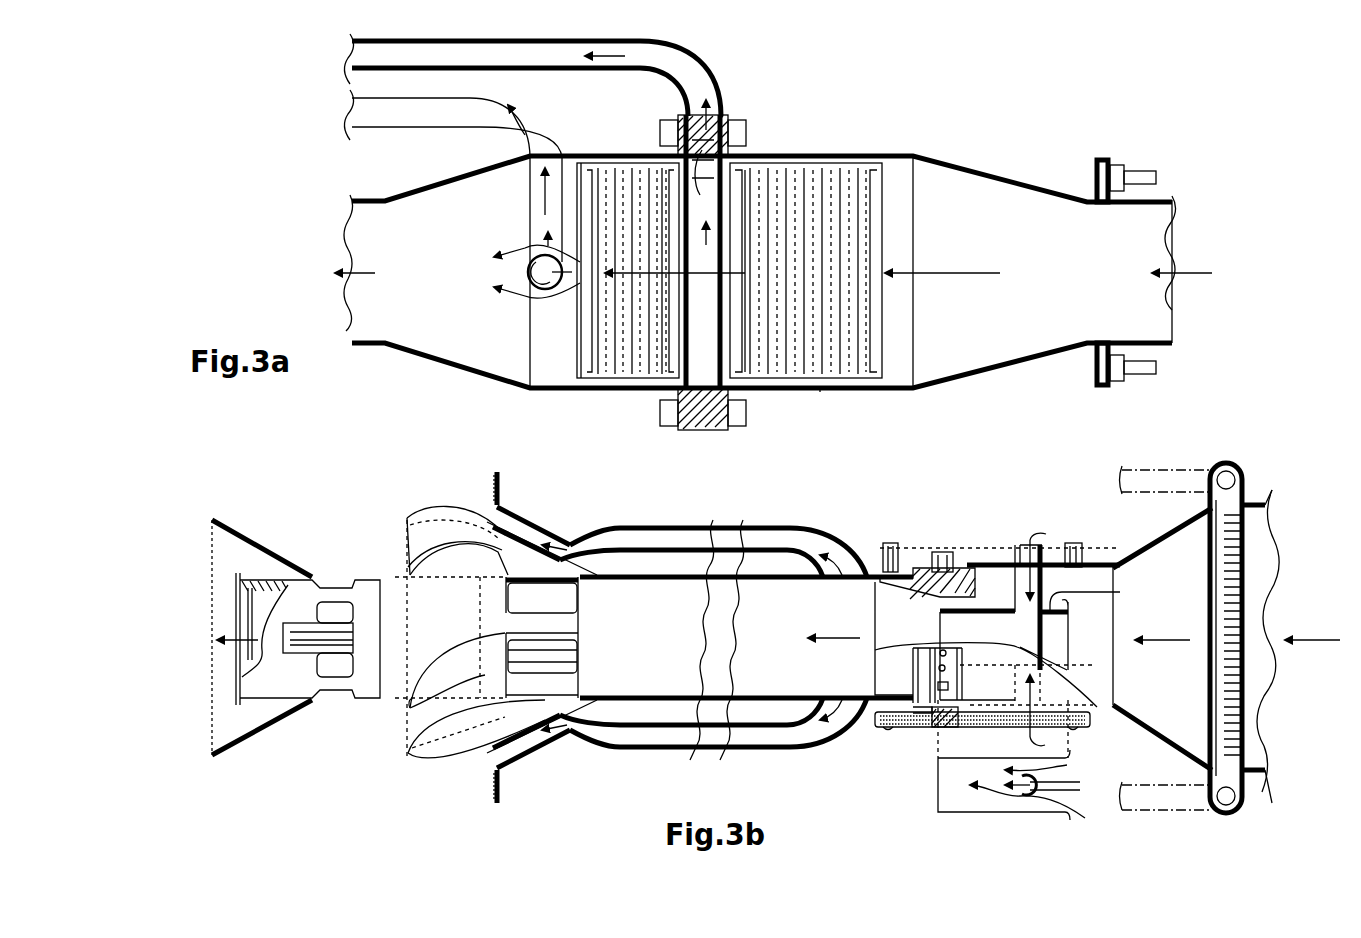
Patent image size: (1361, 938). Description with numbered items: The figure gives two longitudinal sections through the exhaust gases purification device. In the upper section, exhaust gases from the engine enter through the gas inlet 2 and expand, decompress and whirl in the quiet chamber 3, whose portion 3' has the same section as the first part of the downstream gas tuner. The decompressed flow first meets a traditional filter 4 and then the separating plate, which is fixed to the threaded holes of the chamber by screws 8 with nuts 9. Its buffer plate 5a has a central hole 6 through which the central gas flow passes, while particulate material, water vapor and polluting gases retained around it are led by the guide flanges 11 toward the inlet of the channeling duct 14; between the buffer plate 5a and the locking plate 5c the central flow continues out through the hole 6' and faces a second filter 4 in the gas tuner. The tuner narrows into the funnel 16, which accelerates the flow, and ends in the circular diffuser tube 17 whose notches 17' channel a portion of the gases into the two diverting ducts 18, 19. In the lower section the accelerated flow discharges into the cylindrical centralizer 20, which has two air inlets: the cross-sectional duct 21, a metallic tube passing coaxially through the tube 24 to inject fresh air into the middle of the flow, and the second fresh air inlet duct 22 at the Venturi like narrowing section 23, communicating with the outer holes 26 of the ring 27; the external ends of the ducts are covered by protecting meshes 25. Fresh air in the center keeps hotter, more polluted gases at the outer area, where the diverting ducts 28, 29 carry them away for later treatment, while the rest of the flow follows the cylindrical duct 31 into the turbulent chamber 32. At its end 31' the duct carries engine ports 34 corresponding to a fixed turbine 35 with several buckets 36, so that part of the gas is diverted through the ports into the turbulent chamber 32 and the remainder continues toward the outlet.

In FIG. 3A, the gas inlet 2 is at (1183, 271).
In FIG. 3A, the quiet chamber 3 is at (760, 250).
In FIG. 3A, the portion 3' is at (854, 421).
In FIG. 3A, the filter 4 is at (640, 194).
In FIG. 3A, the buffer plate 5a is at (785, 170).
In FIG. 3A, the locking plate 5c is at (680, 349).
In FIG. 3A, the central hole 6 is at (703, 251).
In FIG. 3A, the hole 6' is at (707, 159).
In FIG. 3A, the screws 8 is at (678, 423).
In FIG. 3A, the nuts 9 is at (730, 425).
In FIG. 3A, the guide flanges 11 is at (745, 154).
In FIG. 3A, the channeling duct 14 is at (672, 65).
In FIG. 3B, the funnel 16 is at (1165, 556).
In FIG. 3B, the diffuser tube 17 is at (1284, 646).
In FIG. 3B, the notches 17' is at (1288, 637).
In FIG. 3B, the diverting duct 18 is at (1177, 798).
In FIG. 3B, the diverting duct 19 is at (1177, 478).
In FIG. 3B, the cylindrical centralizer 20 is at (996, 552).
In FIG. 3B, the cross-sectional duct 21 is at (1045, 592).
In FIG. 3B, the second fresh air inlet duct 22 is at (945, 600).
In FIG. 3B, the Venturi like narrowing section 23 is at (873, 600).
In FIG. 3B, the tube 24 is at (1113, 593).
In FIG. 3B, the protecting meshes 25 is at (1016, 565).
In FIG. 3B, the outer holes 26 is at (945, 665).
In FIG. 3B, the ring 27 is at (942, 733).
In FIG. 3B, the diverting duct 28 is at (752, 538).
In FIG. 3B, the diverting duct 29 is at (778, 749).
In FIG. 3B, the cylindrical duct 31 is at (746, 659).
In FIG. 3B, the end 31' is at (461, 746).
In FIG. 3B, the turbulent chamber 32 is at (528, 503).
In FIG. 3B, the engine ports 34 is at (542, 605).
In FIG. 3B, the turbine 35 is at (457, 500).
In FIG. 3B, the buckets 36 is at (460, 546).